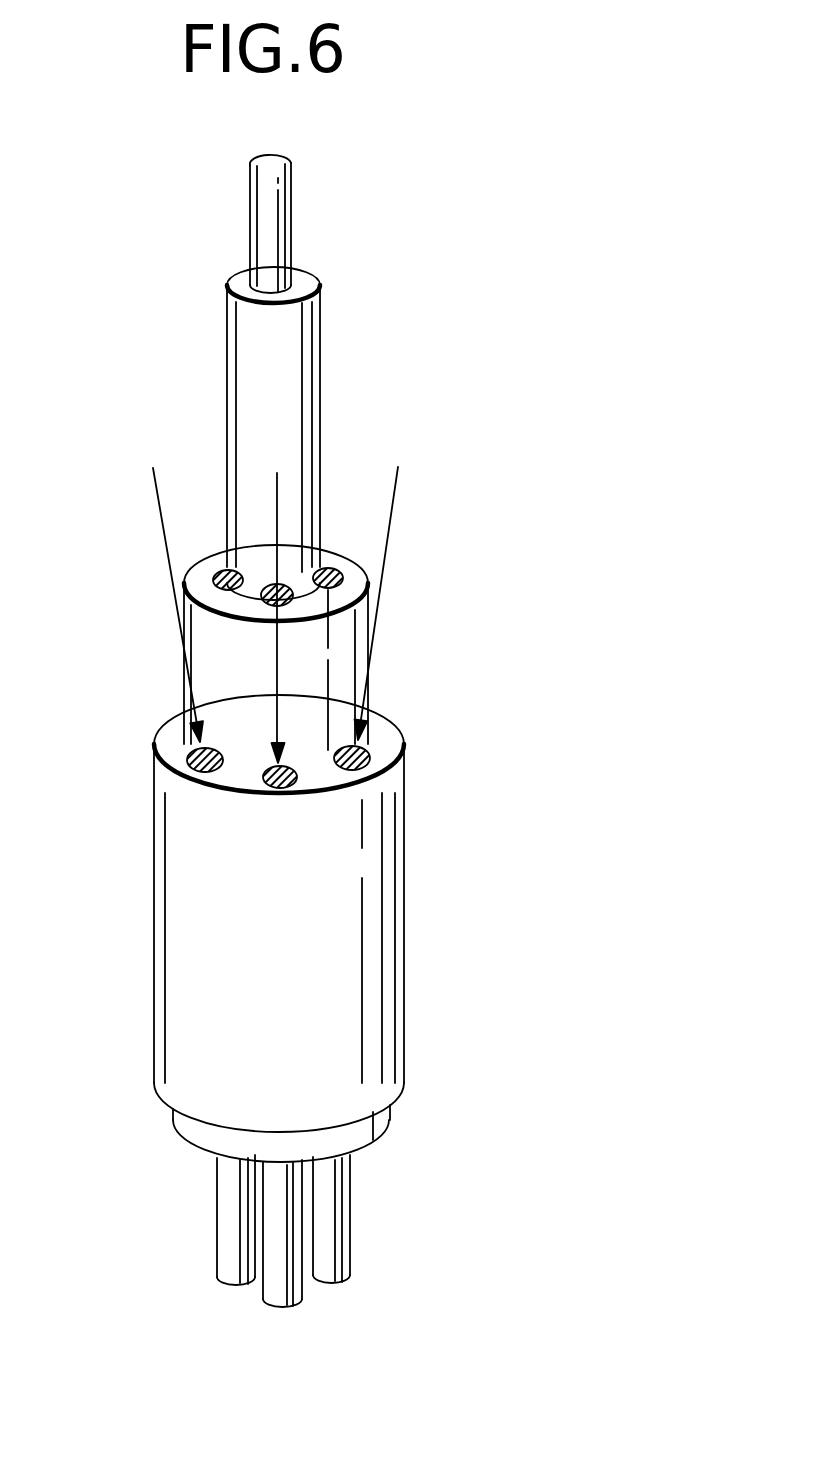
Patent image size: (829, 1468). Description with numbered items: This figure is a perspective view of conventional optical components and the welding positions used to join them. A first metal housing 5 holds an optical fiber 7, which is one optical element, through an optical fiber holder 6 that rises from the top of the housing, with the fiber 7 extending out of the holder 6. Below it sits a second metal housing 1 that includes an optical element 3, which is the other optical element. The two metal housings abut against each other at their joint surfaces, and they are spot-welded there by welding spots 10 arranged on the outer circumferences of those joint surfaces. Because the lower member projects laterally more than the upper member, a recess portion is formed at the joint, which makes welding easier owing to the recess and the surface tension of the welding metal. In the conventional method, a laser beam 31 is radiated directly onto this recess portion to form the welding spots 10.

The second metal housing 1 is at (387, 953).
The optical element 3 is at (373, 1123).
The first metal housing 5 is at (348, 640).
The optical fiber holder 6 is at (305, 333).
The optical fiber 7 is at (283, 206).
The welding spots 10 is at (217, 772).
The laser beam 31 is at (160, 515).